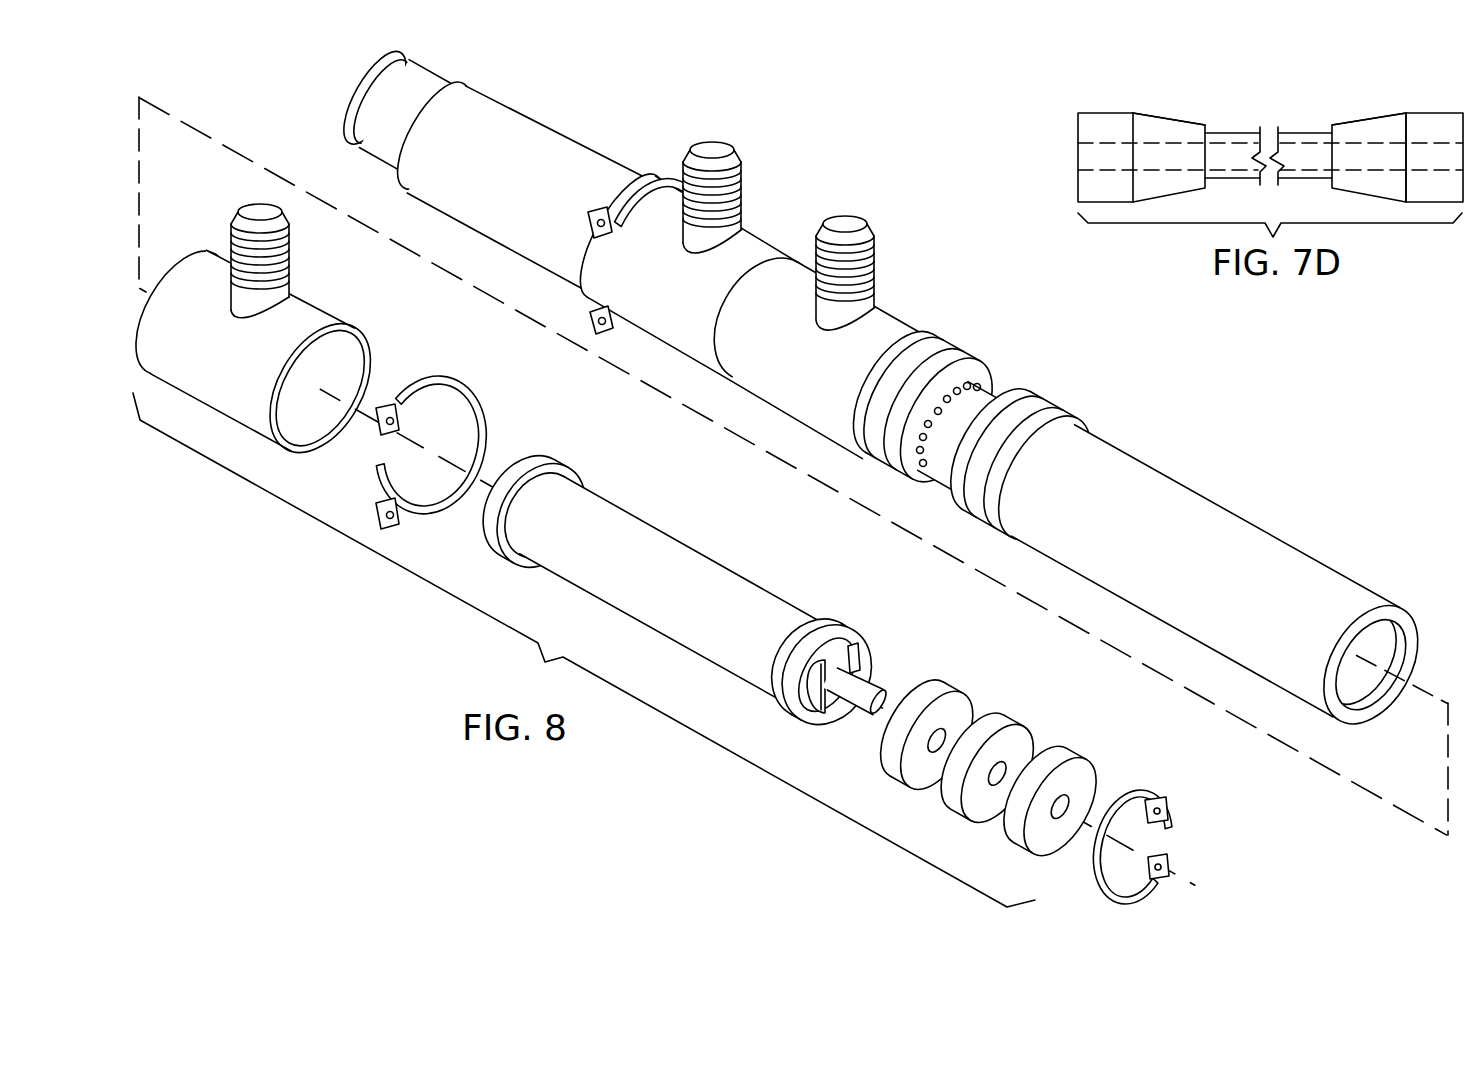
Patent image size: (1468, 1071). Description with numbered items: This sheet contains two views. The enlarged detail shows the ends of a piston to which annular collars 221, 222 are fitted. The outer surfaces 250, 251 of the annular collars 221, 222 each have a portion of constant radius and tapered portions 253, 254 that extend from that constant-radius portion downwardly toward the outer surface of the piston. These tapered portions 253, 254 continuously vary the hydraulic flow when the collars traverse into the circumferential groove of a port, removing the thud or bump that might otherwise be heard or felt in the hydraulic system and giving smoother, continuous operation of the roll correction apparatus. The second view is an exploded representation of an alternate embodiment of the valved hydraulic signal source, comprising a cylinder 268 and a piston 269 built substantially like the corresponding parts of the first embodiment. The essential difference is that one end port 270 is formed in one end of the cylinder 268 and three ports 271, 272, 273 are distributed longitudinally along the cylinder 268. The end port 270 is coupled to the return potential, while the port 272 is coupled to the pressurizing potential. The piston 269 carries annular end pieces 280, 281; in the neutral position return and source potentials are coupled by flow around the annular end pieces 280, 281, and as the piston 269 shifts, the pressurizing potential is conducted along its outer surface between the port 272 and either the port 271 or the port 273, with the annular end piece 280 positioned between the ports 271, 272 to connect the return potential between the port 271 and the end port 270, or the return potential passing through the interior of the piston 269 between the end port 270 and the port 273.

In FIG. 7D, the annular collar 221 is at (1395, 99).
In FIG. 7D, the annular collar 222 is at (1143, 99).
In FIG. 7D, the outer surface 250 is at (1442, 112).
In FIG. 7D, the outer surface 251 is at (1100, 112).
In FIG. 7D, the tapered portion 253 is at (1163, 116).
In FIG. 7D, the tapered portion 254 is at (1374, 116).
In FIG. 8, the cylinder 268 is at (1228, 510).
In FIG. 8, the piston 269 is at (707, 560).
In FIG. 8, the end port 270 is at (360, 120).
In FIG. 8, the port 271 is at (782, 252).
In FIG. 8, the port 272 is at (927, 334).
In FIG. 8, the port 273 is at (190, 260).
In FIG. 8, the annular end piece 280 is at (535, 458).
In FIG. 8, the annular end piece 281 is at (836, 626).